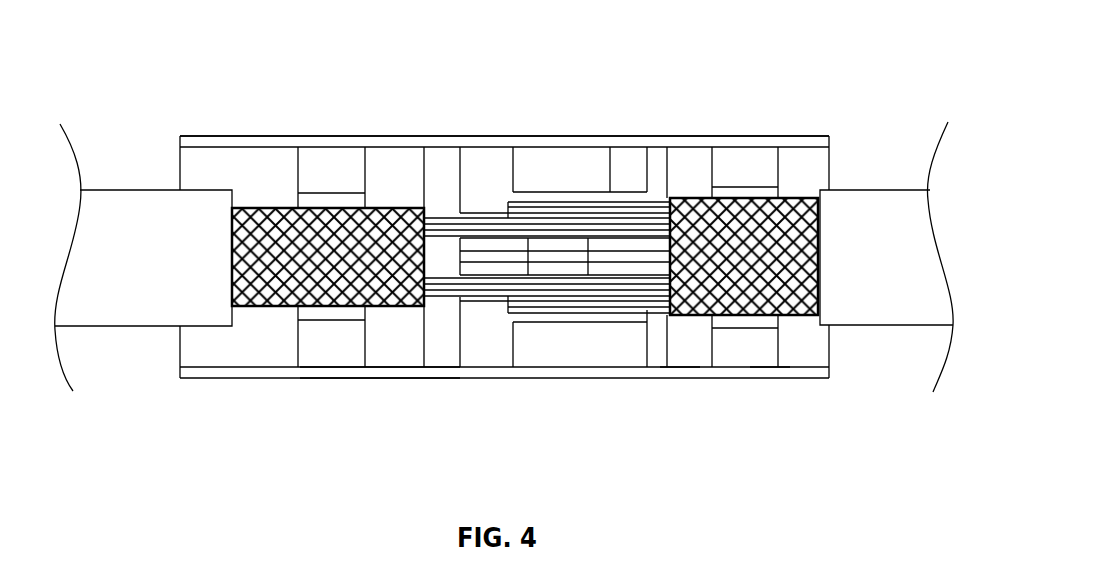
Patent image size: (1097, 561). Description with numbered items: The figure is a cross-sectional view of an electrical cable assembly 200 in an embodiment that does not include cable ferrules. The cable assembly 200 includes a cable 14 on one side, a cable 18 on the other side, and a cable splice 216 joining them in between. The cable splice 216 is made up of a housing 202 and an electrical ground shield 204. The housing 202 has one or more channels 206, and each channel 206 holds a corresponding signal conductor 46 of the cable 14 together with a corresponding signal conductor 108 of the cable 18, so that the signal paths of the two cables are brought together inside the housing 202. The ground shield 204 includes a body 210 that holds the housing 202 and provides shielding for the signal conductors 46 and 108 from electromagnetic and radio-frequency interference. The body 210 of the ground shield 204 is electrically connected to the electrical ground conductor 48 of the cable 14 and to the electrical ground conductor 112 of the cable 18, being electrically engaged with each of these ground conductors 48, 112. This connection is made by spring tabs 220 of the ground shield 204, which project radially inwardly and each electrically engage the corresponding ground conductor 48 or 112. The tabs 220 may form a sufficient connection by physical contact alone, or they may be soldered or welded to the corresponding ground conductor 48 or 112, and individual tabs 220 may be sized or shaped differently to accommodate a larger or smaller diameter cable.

The electrical cable assembly 200 is at (575, 50).
The cable 14 is at (156, 338).
The cable 18 is at (907, 340).
The signal conductor 46 is at (448, 220).
The electrical ground conductor 48 is at (415, 208).
The signal conductor 108 is at (638, 220).
The electrical ground conductor 112 is at (783, 196).
The housing 202 is at (487, 378).
The electrical ground shield 204 is at (365, 378).
The channel 206 is at (578, 190).
The body 210 is at (771, 397).
The cable splice 216 is at (684, 397).
The spring tab 220 is at (337, 158).